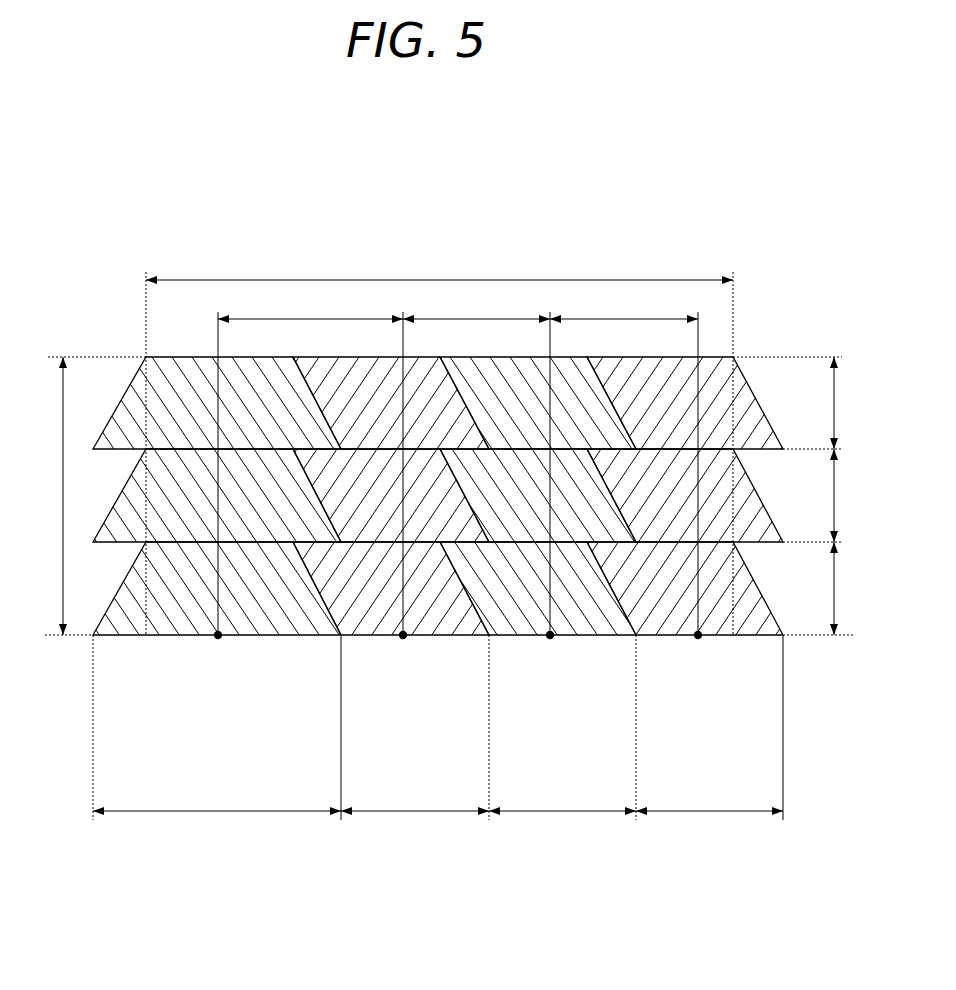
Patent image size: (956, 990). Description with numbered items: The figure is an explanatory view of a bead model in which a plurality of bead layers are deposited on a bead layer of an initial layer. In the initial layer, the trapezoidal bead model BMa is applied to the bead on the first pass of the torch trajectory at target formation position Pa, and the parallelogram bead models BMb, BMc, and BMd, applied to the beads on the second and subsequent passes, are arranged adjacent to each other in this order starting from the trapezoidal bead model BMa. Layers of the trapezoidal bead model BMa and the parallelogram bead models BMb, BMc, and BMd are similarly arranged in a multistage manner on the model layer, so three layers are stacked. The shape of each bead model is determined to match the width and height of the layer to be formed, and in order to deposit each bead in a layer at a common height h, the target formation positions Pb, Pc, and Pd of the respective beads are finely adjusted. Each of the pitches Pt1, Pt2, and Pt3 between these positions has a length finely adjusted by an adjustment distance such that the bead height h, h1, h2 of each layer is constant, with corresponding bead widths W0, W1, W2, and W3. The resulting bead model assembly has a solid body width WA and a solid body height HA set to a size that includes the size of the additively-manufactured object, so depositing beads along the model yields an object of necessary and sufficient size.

The trapezoidal bead model BMa is at (293, 613).
The parallelogram bead model BMb is at (452, 615).
The parallelogram bead model BMc is at (602, 615).
The parallelogram bead model BMd is at (752, 615).
The target formation position Pa is at (215, 653).
The target formation position Pb is at (404, 653).
The target formation position Pc is at (551, 653).
The target formation position Pd is at (697, 653).
The solid body width WA is at (439, 263).
The solid body height HA is at (39, 496).
The pitch Pt1 is at (310, 306).
The pitch Pt2 is at (476, 306).
The pitch Pt3 is at (624, 306).
The bead height h is at (819, 588).
The bead height h1 is at (817, 495).
The bead height h2 is at (817, 403).
The bead width W0 is at (217, 796).
The bead width W1 is at (415, 796).
The bead width W2 is at (562, 796).
The bead width W3 is at (709, 796).